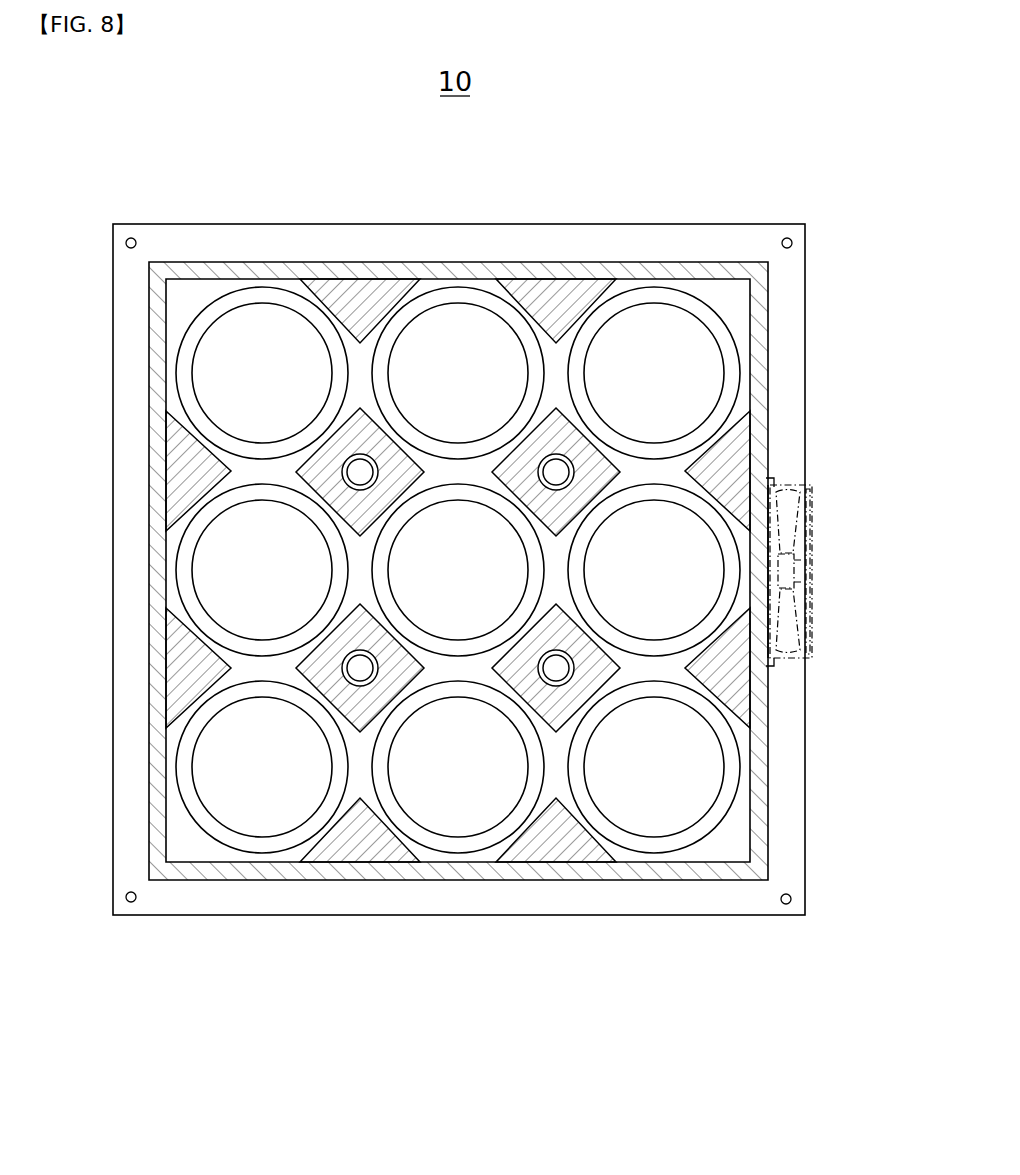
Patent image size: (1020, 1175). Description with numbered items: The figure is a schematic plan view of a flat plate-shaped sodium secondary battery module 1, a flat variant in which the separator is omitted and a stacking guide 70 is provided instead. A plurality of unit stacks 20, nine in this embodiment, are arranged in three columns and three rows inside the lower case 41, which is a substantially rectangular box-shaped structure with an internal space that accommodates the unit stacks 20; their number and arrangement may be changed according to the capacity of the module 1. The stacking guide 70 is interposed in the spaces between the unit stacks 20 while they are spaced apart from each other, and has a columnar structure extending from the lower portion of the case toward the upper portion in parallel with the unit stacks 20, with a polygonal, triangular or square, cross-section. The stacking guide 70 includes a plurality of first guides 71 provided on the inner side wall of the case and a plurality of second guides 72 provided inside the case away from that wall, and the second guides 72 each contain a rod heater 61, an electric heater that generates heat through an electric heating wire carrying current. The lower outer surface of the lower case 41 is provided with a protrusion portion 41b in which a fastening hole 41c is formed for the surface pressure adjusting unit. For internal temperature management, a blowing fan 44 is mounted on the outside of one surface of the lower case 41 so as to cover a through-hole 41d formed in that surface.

The sodium secondary battery module 1 is at (198, 355).
The unit stack 20 is at (176, 733).
The lower case 41 is at (403, 877).
The protrusion portion 41b is at (560, 905).
The fastening hole 41c is at (786, 905).
The through-hole 41d is at (758, 606).
The blowing fan 44 is at (820, 476).
The rod heater 61 is at (567, 466).
The stacking guide 70 is at (458, 481).
The first guide 71 is at (566, 283).
The second guide 72 is at (572, 448).